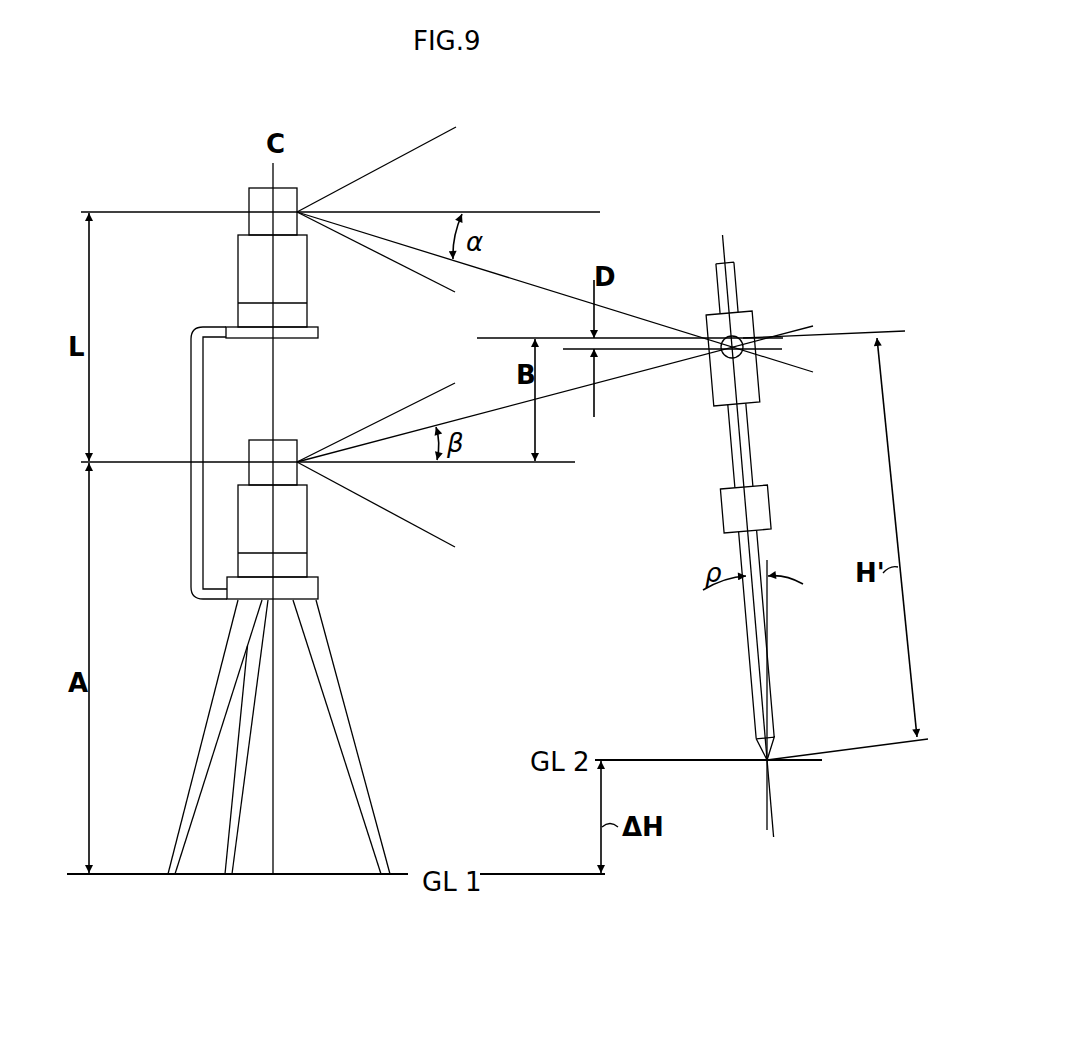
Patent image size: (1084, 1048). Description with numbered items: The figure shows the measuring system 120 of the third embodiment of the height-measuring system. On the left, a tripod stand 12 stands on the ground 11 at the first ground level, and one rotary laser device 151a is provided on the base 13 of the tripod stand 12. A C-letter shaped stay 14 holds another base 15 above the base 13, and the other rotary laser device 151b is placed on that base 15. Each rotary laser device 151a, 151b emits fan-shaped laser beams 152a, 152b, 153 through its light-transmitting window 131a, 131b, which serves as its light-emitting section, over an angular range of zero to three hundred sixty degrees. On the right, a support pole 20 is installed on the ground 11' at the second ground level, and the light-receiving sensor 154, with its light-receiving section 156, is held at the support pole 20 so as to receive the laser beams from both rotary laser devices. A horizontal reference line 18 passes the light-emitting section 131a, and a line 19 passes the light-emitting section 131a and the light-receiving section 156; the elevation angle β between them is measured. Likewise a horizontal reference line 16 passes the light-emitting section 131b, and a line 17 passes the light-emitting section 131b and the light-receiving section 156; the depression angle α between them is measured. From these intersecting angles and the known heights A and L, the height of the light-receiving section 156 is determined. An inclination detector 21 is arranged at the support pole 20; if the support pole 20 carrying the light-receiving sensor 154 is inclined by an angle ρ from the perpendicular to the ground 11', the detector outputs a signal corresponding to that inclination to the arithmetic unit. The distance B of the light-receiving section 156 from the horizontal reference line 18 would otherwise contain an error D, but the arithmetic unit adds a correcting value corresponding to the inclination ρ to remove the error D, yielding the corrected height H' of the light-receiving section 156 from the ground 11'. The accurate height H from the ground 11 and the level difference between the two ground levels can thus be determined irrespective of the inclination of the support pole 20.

The ground 11 is at (304, 737).
The ground 11' is at (708, 719).
The tripod stand 12 is at (350, 698).
The base 13 is at (318, 590).
The C-letter shaped stay 14 is at (191, 382).
The base 15 is at (318, 330).
The horizontal reference line 16 is at (514, 212).
The line 17 is at (537, 287).
The horizontal reference line 18 is at (500, 463).
The line 19 is at (562, 395).
The support pole 20 is at (773, 522).
The inclination detector 21 is at (768, 507).
The measuring system 120 is at (738, 469).
The light-transmitting window 131a is at (300, 440).
The light-transmitting window 131b is at (299, 187).
The rotary laser device 151a is at (313, 473).
The rotary laser device 151b is at (266, 225).
The fan-shaped laser beam 152a is at (451, 331).
The fan-shaped laser beam 152b is at (451, 331).
The fan-shaped laser beam 153 is at (407, 152).
The light-receiving sensor 154 is at (752, 313).
The light-receiving section 156 is at (742, 355).